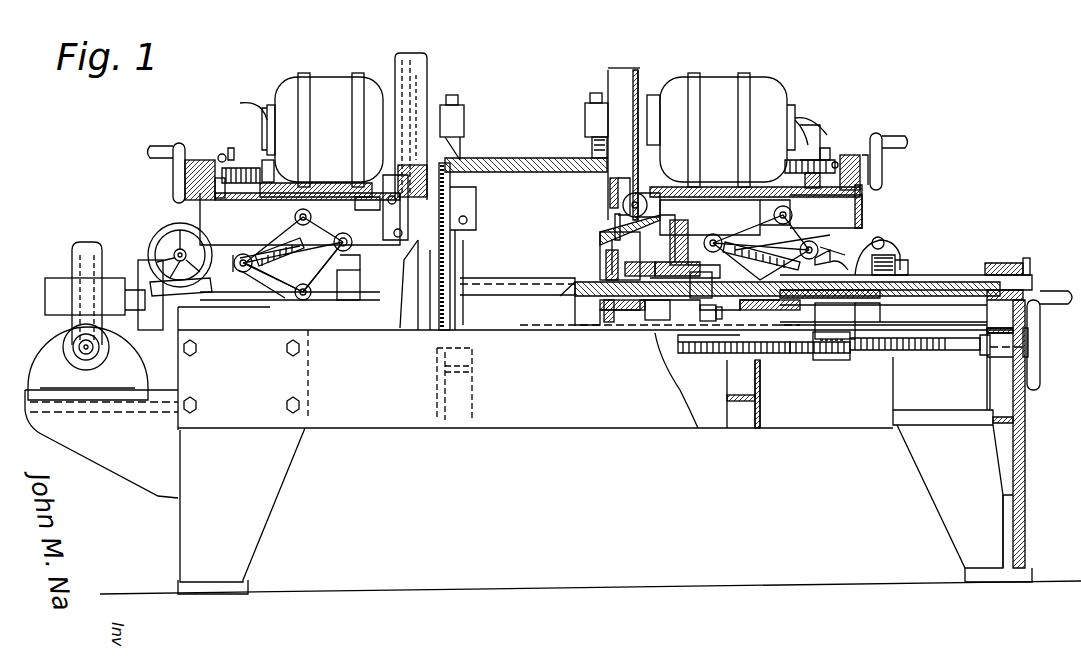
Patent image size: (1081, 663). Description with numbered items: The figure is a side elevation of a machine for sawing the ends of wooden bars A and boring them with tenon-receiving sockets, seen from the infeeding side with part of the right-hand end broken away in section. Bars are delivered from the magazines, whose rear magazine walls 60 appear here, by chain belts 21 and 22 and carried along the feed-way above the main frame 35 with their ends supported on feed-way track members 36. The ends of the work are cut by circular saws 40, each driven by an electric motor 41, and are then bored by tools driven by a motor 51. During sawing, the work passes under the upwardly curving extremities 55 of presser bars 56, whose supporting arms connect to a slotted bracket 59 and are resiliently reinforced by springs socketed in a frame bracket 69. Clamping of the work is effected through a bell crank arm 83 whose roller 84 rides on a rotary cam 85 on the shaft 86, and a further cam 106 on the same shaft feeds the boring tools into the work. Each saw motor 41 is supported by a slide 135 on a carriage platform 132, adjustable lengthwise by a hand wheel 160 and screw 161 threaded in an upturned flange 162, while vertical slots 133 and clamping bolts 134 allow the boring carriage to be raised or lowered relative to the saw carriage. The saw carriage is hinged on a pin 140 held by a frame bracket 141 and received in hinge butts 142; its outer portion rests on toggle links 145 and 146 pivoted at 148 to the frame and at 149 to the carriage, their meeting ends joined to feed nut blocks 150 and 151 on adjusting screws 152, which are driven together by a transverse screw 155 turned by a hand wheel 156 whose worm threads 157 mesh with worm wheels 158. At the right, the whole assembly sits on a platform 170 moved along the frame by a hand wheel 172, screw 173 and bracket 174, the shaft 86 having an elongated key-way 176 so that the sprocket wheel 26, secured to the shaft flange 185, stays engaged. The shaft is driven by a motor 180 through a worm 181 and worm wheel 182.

The chain belt 21 is at (458, 325).
The chain belt 22 is at (620, 330).
The sprocket wheel 26 is at (600, 262).
The main frame 35 is at (553, 447).
The feed-way track member 36 is at (610, 186).
The circular saw 40 is at (420, 92).
The electric motor 41 is at (550, 135).
The motor 51 is at (260, 118).
The upwardly curving extremity 55 is at (465, 156).
The presser bar 56 is at (592, 157).
The slotted bracket 59 is at (468, 115).
The rear magazine wall 60 is at (391, 146).
The frame bracket 69 is at (585, 112).
The bell crank arm 83 is at (728, 316).
The roller 84 is at (700, 355).
The rotary cam 85 is at (344, 268).
The shaft 86 is at (508, 282).
The cam 106 is at (644, 312).
The platform 132 is at (210, 220).
The vertical slot 133 is at (222, 154).
The clamping bolt 134 is at (222, 166).
The slide 135 is at (262, 208).
The hinge pin 140 is at (622, 210).
The frame bracket 141 is at (618, 222).
The hinge butt 142 is at (600, 242).
The toggle link 145 is at (522, 265).
The toggle link 146 is at (536, 259).
The pivot 148 is at (310, 300).
The pivot 149 is at (790, 208).
The feed nut block 150 is at (250, 290).
The feed nut block 151 is at (330, 222).
The adjusting screw 152 is at (290, 300).
The transverse screw 155 is at (900, 248).
The hand wheel 156 is at (160, 228).
The worm thread 157 is at (900, 242).
The worm wheel 158 is at (910, 262).
The hand wheel 160 is at (175, 180).
The screw 161 is at (272, 190).
The upturned flange 162 is at (245, 160).
The platform 170 is at (780, 310).
The hand wheel 172 is at (1042, 322).
The screw 173 is at (955, 350).
The bracket 174 is at (836, 362).
The key-way 176 is at (850, 278).
The motor 180 is at (38, 306).
The worm 181 is at (100, 352).
The worm wheel 182 is at (72, 262).
The shaft flange 185 is at (616, 322).
The bar A is at (505, 168).